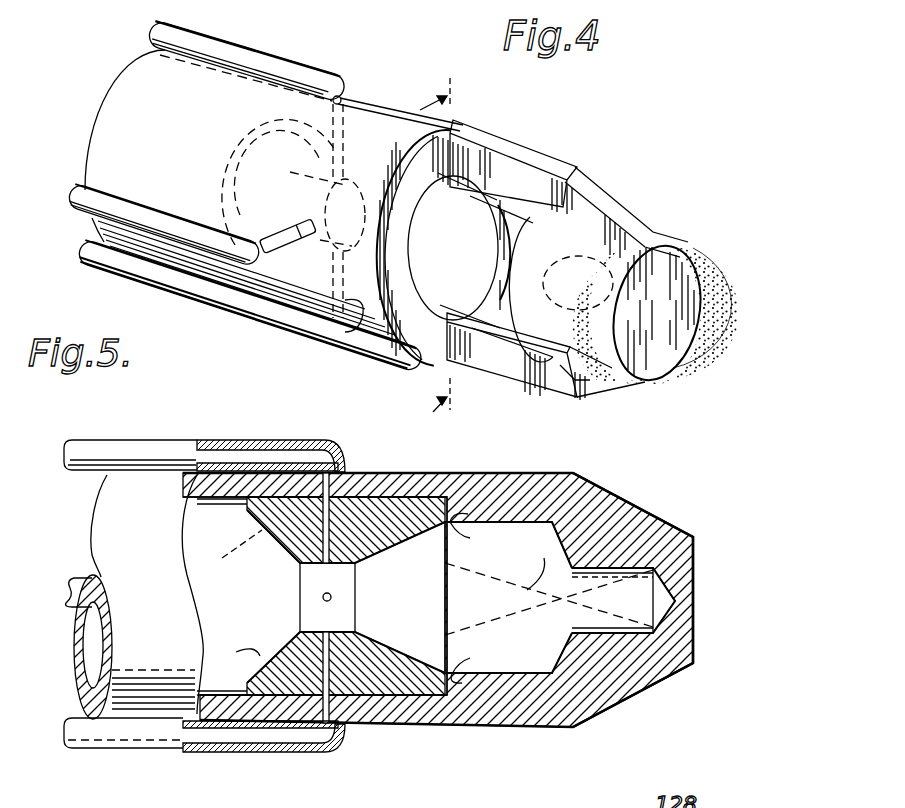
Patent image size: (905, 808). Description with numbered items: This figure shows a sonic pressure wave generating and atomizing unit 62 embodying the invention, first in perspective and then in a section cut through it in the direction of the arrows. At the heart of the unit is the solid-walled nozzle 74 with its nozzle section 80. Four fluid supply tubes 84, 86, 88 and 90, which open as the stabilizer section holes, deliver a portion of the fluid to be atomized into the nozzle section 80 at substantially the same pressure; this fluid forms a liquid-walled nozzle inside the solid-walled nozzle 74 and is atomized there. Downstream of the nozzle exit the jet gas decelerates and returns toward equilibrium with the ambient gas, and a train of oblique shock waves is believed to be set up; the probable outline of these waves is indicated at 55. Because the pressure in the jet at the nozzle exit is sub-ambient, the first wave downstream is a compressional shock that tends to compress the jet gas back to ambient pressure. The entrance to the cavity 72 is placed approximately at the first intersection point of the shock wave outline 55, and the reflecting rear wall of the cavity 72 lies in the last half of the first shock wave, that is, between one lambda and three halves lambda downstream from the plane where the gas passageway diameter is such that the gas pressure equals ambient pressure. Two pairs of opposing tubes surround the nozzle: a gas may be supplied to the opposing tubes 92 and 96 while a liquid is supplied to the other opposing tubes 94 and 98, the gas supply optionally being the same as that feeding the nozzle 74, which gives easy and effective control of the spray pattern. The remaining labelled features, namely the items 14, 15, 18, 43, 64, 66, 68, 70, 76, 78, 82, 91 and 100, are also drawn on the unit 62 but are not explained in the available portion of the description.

In FIG. 4, the nozzle body portion 14 is at (540, 377).
In FIG. 4, the section line 15 is at (449, 245).
In FIG. 4, the stippled surface 18 is at (597, 385).
In FIG. 5, the section indicator 43 is at (582, 422).
In FIG. 5, the shock wave outline 55 is at (549, 591).
In FIG. 4, the atomizing unit 62 is at (238, 337).
In FIG. 5, the atomizing unit 62 is at (590, 736).
In FIG. 4, the nozzle head 64 is at (629, 203).
In FIG. 5, the nozzle head 64 is at (659, 514).
In FIG. 4, the top surface / clip 66 is at (397, 100).
In FIG. 5, the top surface / clip 66 is at (452, 473).
In FIG. 4, the side slabs 68 is at (553, 167).
In FIG. 5, the side slabs 68 is at (530, 473).
In FIG. 4, the end cap 70 is at (687, 260).
In FIG. 5, the end cap 70 is at (696, 578).
In FIG. 5, the cavity 72 is at (622, 625).
In FIG. 5, the nozzle 74 is at (242, 512).
In FIG. 5, the shoulder 76 is at (475, 598).
In FIG. 4, the inlet chamber 78 is at (280, 167).
In FIG. 5, the inlet chamber 78 is at (285, 587).
In FIG. 4, the nozzle section 80 is at (336, 211).
In FIG. 5, the nozzle section 80 is at (310, 620).
In FIG. 4, the outlet chamber 82 is at (465, 251).
In FIG. 5, the outlet chamber 82 is at (420, 577).
In FIG. 4, the fluid supply tube 84 is at (343, 123).
In FIG. 5, the fluid supply tube 84 is at (360, 474).
In FIG. 4, the fluid supply tube 86 is at (413, 173).
In FIG. 5, the fluid supply tube 86 is at (331, 598).
In FIG. 4, the fluid supply tube 88 is at (353, 350).
In FIG. 5, the fluid supply tube 88 is at (348, 687).
In FIG. 4, the fluid supply tube 90 is at (282, 228).
In FIG. 5, the cone surface 91 is at (231, 600).
In FIG. 4, the tube 92 is at (252, 50).
In FIG. 5, the tube 92 is at (160, 444).
In FIG. 5, the tube 94 is at (84, 578).
In FIG. 4, the tube 96 is at (98, 270).
In FIG. 5, the tube 96 is at (165, 748).
In FIG. 4, the tube 98 is at (80, 180).
In FIG. 4, the stippled end surface 100 is at (737, 258).